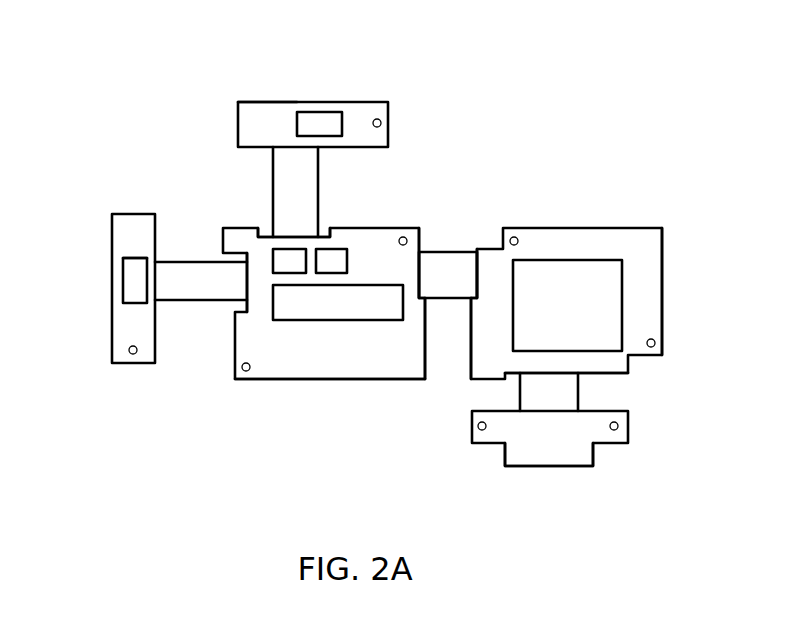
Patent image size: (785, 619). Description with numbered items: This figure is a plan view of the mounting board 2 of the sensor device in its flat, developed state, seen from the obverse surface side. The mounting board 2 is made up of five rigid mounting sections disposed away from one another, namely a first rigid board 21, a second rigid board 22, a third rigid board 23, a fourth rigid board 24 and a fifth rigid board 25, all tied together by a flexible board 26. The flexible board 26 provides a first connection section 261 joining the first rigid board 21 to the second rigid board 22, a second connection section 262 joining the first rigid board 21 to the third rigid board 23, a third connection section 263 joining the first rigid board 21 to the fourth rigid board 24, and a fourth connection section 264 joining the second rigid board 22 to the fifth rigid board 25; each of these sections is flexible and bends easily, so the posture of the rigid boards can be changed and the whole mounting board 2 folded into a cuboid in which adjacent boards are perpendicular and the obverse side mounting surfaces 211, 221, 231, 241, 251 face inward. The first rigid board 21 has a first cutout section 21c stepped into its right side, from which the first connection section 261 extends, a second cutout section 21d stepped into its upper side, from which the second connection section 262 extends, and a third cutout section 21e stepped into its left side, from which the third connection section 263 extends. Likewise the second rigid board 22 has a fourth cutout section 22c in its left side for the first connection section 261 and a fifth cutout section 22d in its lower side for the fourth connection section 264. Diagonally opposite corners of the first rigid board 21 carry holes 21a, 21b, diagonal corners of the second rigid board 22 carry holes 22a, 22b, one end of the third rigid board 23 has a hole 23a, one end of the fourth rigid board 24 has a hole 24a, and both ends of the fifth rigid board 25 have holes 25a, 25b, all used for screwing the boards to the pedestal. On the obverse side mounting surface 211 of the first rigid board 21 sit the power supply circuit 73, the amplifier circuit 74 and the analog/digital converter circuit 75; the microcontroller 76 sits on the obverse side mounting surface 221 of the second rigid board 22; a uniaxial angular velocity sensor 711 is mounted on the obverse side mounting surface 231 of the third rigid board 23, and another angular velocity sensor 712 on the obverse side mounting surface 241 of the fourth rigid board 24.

The mounting board 2 is at (597, 95).
The first rigid board 21 is at (345, 392).
The hole 21a is at (406, 238).
The hole 21b is at (243, 372).
The first cutout section 21c is at (413, 275).
The second cutout section 21d is at (292, 237).
The third cutout section 21e is at (251, 290).
The obverse side mounting surface 211 is at (378, 365).
The second rigid board 22 is at (626, 224).
The hole 22a is at (516, 236).
The hole 22b is at (655, 343).
The fourth cutout section 22c is at (495, 282).
The fifth cutout section 22d is at (547, 377).
The obverse side mounting surface 221 is at (647, 298).
The third rigid board 23 is at (305, 90).
The hole 23a is at (381, 122).
The obverse side mounting surface 231 is at (262, 118).
The fourth rigid board 24 is at (101, 233).
The hole 24a is at (133, 356).
The obverse side mounting surface 241 is at (123, 272).
The fifth rigid board 25 is at (610, 452).
The hole 25a is at (620, 426).
The hole 25b is at (480, 432).
The obverse side mounting surface 251 is at (560, 453).
The flexible board 26 is at (446, 241).
The first connection section 261 is at (451, 290).
The second connection section 262 is at (309, 172).
The third connection section 263 is at (187, 278).
The fourth connection section 264 is at (565, 402).
The power supply circuit 73 is at (332, 262).
The amplifier circuit 74 is at (283, 263).
The analog/digital converter circuit 75 is at (303, 310).
The microcontroller 76 is at (568, 282).
The angular velocity sensor 711 is at (324, 122).
The angular velocity sensor 712 is at (135, 290).